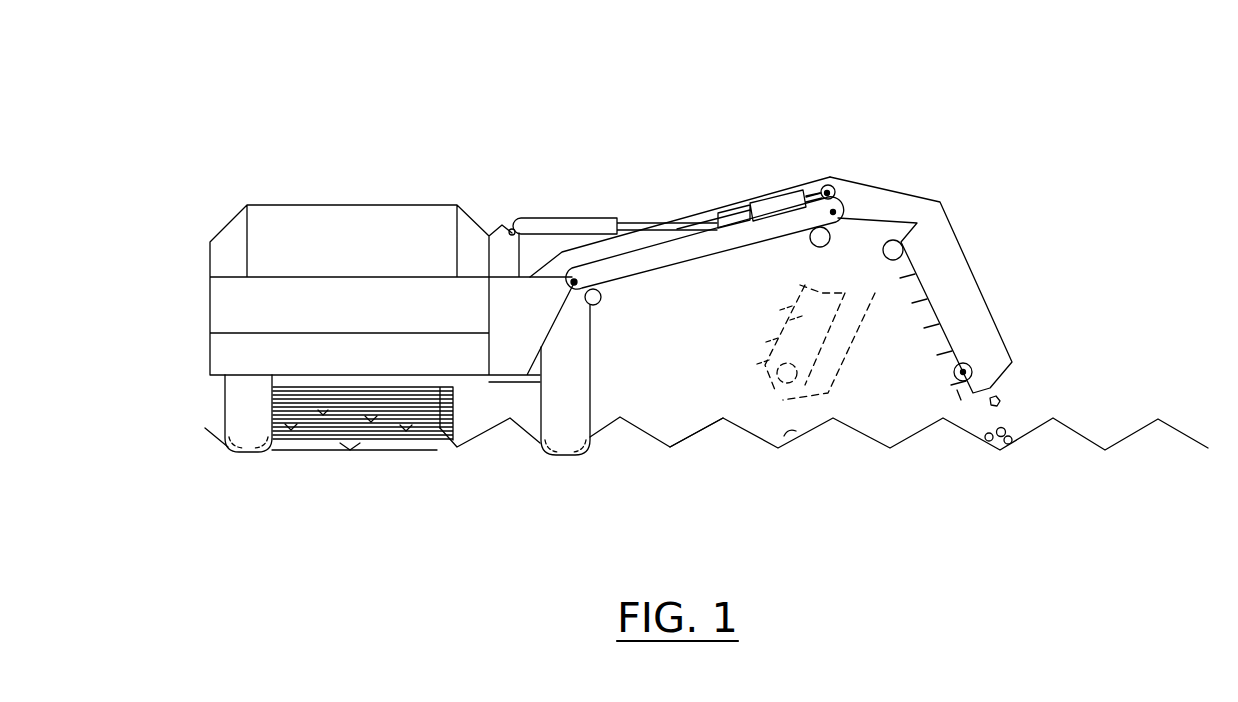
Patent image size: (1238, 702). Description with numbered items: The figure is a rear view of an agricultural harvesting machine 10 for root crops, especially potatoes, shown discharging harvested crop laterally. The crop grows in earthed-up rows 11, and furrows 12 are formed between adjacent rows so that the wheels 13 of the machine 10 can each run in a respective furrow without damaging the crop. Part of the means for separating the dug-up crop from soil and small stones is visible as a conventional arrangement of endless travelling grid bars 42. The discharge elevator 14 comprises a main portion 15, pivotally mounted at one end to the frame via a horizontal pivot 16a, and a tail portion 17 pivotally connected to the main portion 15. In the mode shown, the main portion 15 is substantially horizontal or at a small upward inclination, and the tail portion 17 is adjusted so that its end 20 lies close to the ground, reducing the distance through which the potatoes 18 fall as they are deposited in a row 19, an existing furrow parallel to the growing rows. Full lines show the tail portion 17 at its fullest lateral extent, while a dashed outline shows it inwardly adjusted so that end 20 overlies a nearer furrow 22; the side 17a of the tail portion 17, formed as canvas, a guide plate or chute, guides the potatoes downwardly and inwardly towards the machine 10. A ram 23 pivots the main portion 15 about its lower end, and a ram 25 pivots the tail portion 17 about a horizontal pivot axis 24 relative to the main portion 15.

The agricultural harvesting machine 10 is at (443, 148).
The earthed-up rows 11 is at (615, 430).
The furrows 12 is at (672, 433).
The wheels 13 is at (248, 398).
The discharge elevator 14 is at (758, 162).
The main portion 15 is at (743, 203).
The horizontal pivot 16a is at (573, 284).
The tail portion 17 is at (952, 253).
The side of the tail portion 17a is at (985, 298).
The potatoes 18 is at (1010, 427).
The row 19 is at (1020, 430).
The end 20 is at (1007, 360).
The furrow 22 is at (803, 452).
The ram 23 is at (555, 224).
The horizontal pivot axis 24 is at (836, 200).
The ram 25 is at (792, 197).
The endless travelling grid bars 42 is at (458, 405).